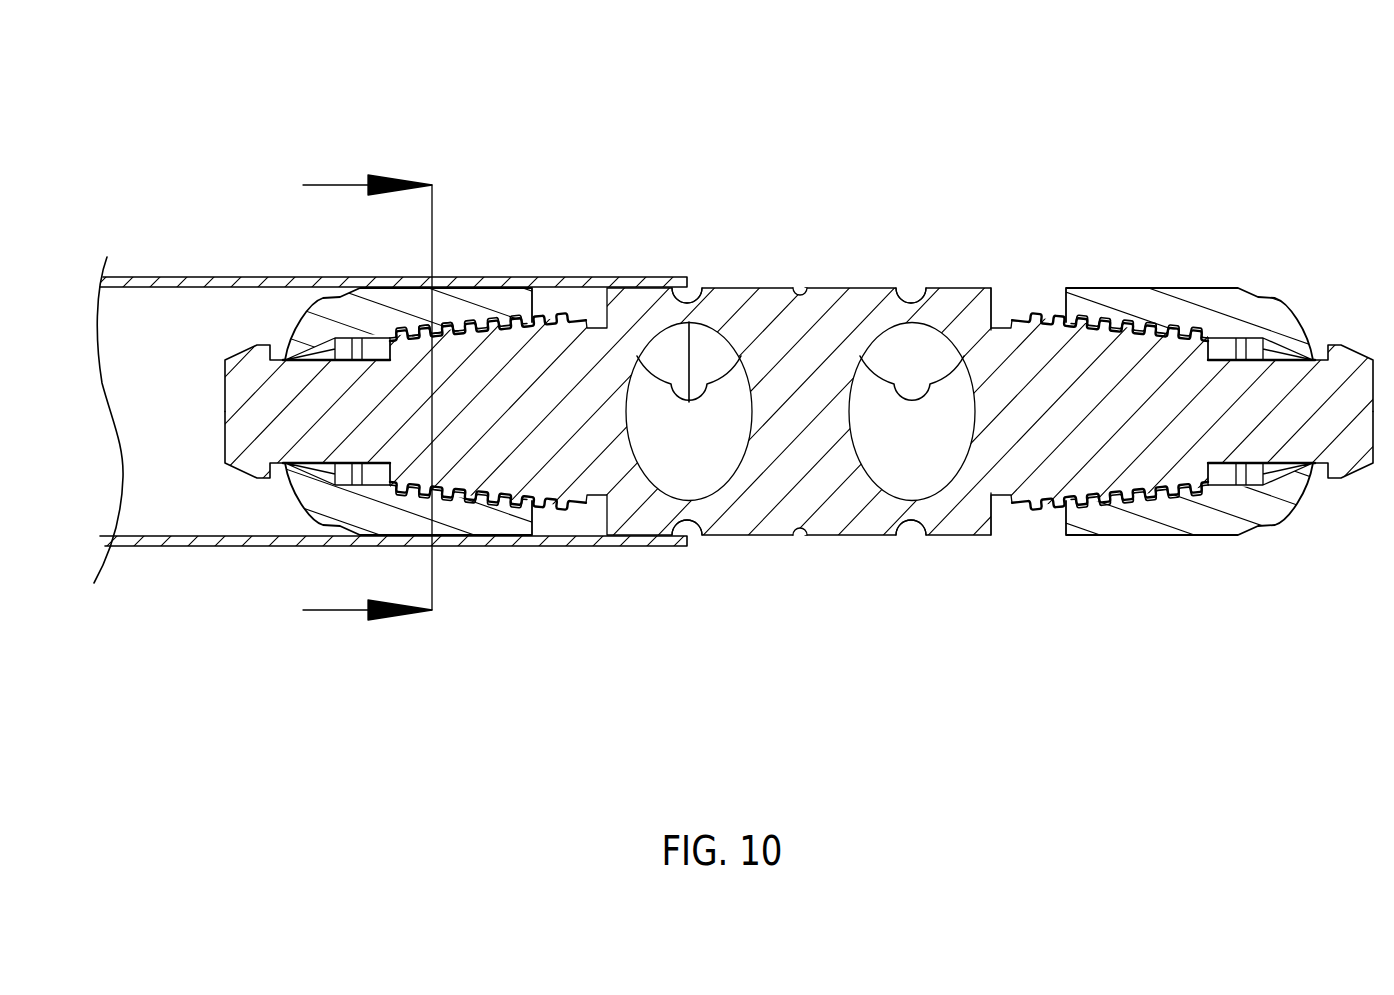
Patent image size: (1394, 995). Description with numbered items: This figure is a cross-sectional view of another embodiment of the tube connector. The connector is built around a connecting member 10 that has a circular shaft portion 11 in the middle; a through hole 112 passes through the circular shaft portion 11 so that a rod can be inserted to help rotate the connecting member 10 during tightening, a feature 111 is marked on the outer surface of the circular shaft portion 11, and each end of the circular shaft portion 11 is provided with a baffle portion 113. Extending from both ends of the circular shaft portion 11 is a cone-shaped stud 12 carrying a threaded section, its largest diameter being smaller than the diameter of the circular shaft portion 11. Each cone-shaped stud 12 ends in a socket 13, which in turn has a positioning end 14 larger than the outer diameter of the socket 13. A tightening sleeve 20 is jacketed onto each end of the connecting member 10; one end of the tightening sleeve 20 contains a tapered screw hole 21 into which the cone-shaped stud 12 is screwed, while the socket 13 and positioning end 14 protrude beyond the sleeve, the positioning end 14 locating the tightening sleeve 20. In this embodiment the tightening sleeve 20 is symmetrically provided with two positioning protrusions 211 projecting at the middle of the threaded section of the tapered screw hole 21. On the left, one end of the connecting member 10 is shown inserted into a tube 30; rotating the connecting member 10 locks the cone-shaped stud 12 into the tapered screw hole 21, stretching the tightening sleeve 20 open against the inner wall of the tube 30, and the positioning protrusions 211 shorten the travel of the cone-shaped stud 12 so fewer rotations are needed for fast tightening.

The connecting member 10 is at (697, 354).
The circular shaft portion 11 is at (875, 300).
The groove 111 is at (797, 288).
The through hole 112 is at (915, 340).
The baffle portion 113 is at (998, 302).
The cone-shaped stud 12 is at (521, 340).
The socket 13 is at (303, 375).
The positioning end 14 is at (243, 370).
The tightening sleeve 20 is at (800, 424).
The tapered screw hole 21 is at (383, 334).
The positioning protrusion 211 is at (439, 331).
The tube 30 is at (172, 278).